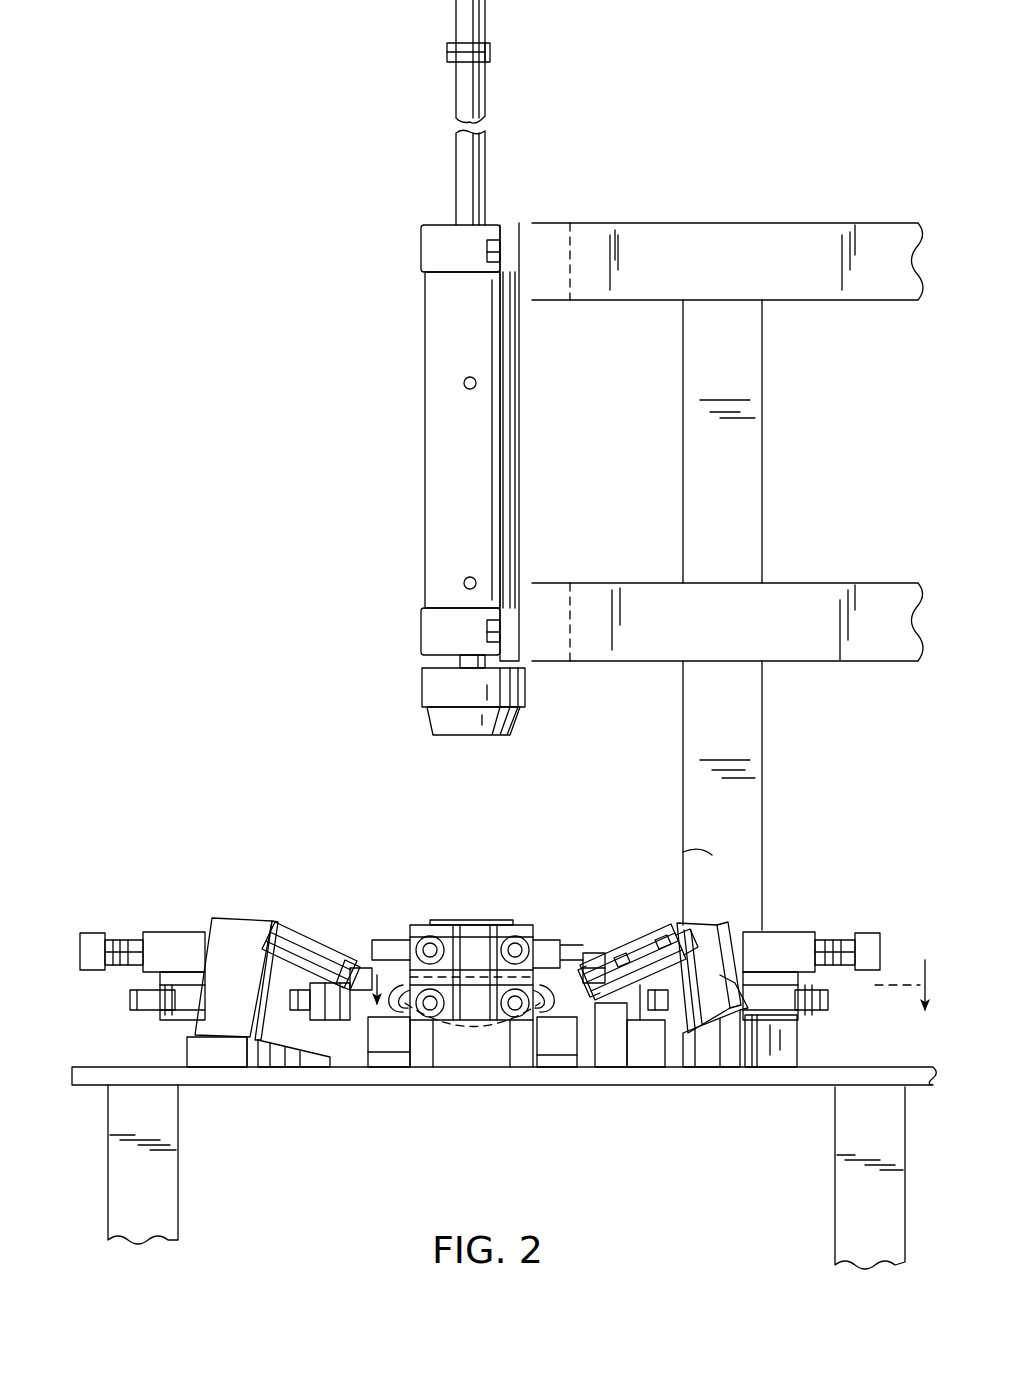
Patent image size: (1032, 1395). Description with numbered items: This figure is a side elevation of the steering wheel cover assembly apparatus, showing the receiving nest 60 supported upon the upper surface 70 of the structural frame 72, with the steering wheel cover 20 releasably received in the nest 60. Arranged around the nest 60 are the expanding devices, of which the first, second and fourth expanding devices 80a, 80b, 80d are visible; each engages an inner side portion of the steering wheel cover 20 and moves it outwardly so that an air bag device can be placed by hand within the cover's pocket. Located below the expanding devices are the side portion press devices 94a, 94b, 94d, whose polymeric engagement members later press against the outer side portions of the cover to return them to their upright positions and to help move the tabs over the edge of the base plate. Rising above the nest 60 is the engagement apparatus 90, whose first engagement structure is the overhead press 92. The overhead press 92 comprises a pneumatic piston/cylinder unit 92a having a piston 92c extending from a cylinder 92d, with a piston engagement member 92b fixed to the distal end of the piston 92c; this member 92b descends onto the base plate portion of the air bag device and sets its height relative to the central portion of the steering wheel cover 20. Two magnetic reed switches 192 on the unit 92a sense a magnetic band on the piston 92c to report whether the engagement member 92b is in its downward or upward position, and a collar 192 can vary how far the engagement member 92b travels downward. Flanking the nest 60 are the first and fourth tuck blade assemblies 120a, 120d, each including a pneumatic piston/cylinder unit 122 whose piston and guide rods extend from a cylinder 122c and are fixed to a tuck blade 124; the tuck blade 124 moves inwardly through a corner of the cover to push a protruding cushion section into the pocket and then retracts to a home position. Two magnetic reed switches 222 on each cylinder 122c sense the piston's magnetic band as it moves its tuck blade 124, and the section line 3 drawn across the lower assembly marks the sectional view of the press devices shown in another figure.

The steering wheel cover 20 is at (398, 988).
The section line 3 is at (650, 1013).
The receiving nest 60 is at (555, 1042).
The upper surface 70 is at (343, 1076).
The structural frame 72 is at (170, 1199).
The first expanding device 80a is at (510, 915).
The second expanding device 80b is at (185, 927).
The fourth expanding device 80d is at (813, 925).
The engagement apparatus 90 is at (519, 212).
The overhead press 92 is at (420, 479).
The pneumatic piston/cylinder unit 92a is at (458, 233).
The piston engagement member 92b is at (442, 722).
The piston 92c is at (462, 662).
The cylinder 92d is at (445, 478).
The first side portion press device 94a is at (477, 1040).
The second side portion press device 94b is at (160, 1035).
The fourth side portion press device 94d is at (812, 1035).
The first tuck blade assembly 120a is at (265, 915).
The fourth tuck blade assembly 120d is at (713, 915).
The pneumatic piston/cylinder unit 122 is at (638, 921).
The cylinder 122c is at (628, 995).
The tuck blade 124 is at (575, 915).
The magnetic reed switches 192 is at (490, 52).
The magnetic reed switches 222 is at (660, 940).